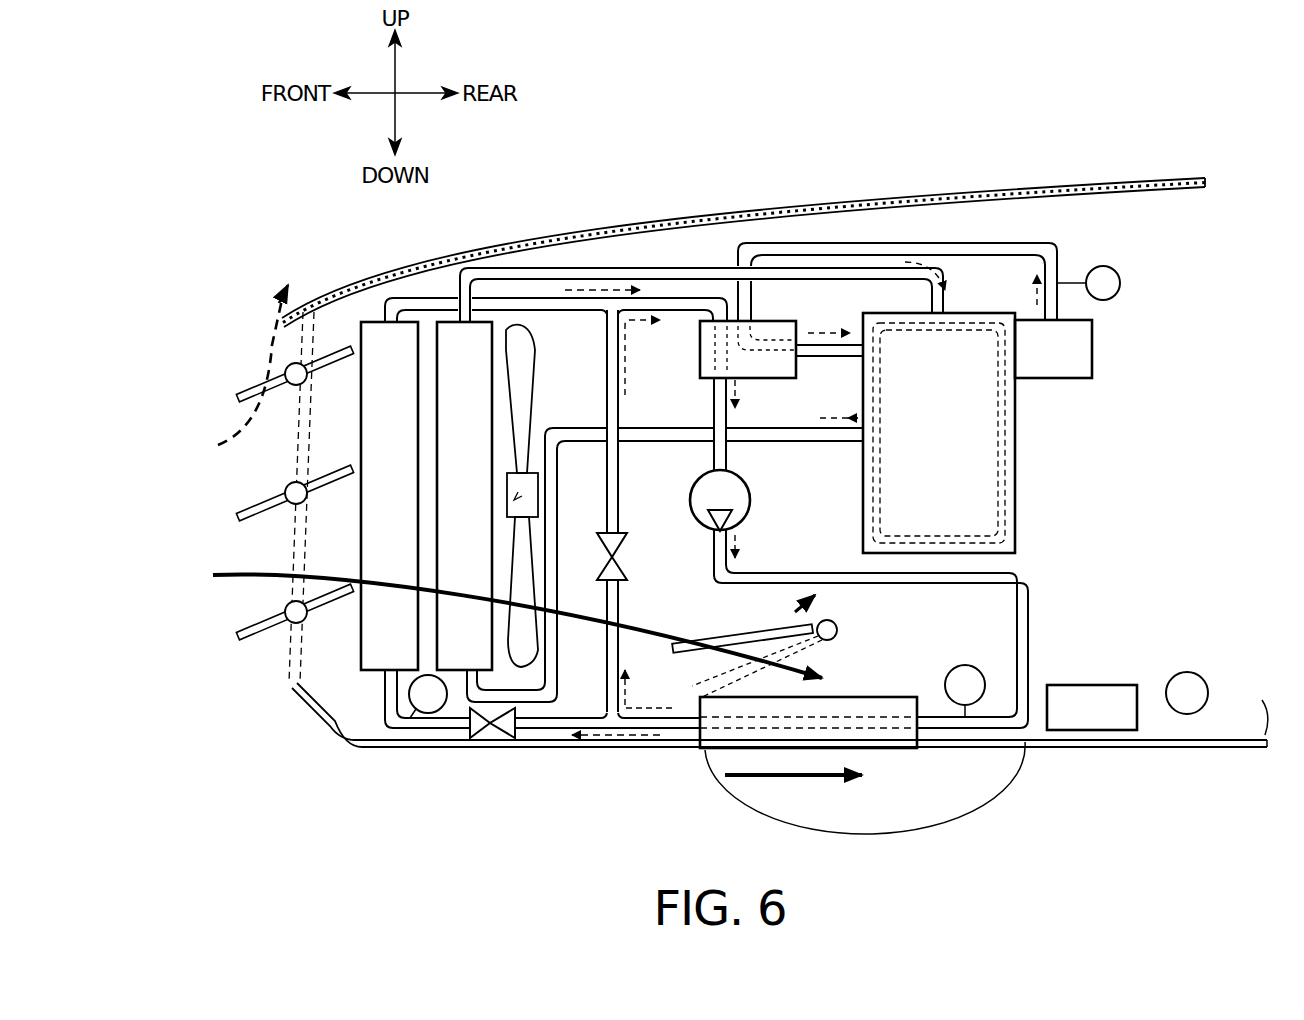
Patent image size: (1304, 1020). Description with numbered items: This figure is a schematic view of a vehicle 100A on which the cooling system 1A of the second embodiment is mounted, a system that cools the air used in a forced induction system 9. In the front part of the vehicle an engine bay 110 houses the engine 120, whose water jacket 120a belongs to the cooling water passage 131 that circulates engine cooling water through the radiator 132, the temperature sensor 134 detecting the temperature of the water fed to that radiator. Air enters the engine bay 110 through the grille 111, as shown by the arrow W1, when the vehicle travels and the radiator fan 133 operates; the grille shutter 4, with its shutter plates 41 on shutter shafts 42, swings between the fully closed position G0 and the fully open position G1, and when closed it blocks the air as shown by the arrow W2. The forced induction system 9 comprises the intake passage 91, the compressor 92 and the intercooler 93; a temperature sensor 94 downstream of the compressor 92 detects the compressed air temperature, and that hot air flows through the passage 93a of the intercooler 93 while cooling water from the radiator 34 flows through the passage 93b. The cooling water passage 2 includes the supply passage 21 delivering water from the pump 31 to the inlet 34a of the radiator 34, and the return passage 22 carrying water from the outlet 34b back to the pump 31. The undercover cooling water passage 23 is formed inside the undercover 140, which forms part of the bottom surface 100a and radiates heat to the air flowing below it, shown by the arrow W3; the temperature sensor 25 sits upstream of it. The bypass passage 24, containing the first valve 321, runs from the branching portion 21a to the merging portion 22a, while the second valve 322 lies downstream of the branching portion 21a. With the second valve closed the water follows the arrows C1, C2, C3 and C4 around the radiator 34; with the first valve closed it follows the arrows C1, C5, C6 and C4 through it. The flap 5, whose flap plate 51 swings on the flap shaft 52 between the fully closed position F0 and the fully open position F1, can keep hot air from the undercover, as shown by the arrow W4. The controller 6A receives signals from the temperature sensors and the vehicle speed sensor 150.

The vehicle 100A is at (1000, 108).
The engine bay 110 is at (1068, 212).
The forced induction system 9 is at (1077, 235).
The radiator 34 is at (372, 322).
The inlet 34a is at (372, 688).
The outlet 34b is at (391, 312).
The cooling water passage 2 is at (442, 290).
The merging portion 22a is at (600, 318).
The arrow C6 is at (615, 283).
The cooling water passage 131 is at (886, 266).
The intake passage 91 is at (970, 243).
The intercooler 93 is at (775, 321).
The passage 93a is at (800, 362).
The passage 93b is at (705, 360).
The arrow C3 is at (640, 340).
The arrow C4 is at (745, 392).
The compressor 92 is at (1060, 378).
The engine 120 is at (1015, 490).
The water jacket 120a is at (1008, 520).
The temperature sensor 94 is at (1120, 283).
The return passage 22 is at (714, 400).
The pump 31 is at (752, 500).
The arrow C1 is at (745, 540).
The supply passage 21 is at (835, 573).
The branching portion 21a is at (601, 712).
The bypass passage 24 is at (620, 470).
The first valve 321 is at (628, 556).
The radiator 132 is at (512, 328).
The radiator fan 133 is at (535, 390).
The second valve 322 is at (490, 740).
The temperature sensor 134 is at (410, 710).
The arrow C5 is at (617, 745).
The arrow C2 is at (655, 745).
The undercover cooling water passage 23 is at (905, 750).
The undercover 140 is at (722, 757).
The temperature sensor 25 is at (945, 684).
The flap plate 51 is at (700, 638).
The flap shaft 52 is at (838, 630).
The flap 5 is at (832, 612).
The fully open position F1 is at (690, 648).
The fully closed position F0 is at (788, 650).
The arrow W4 is at (792, 606).
The arrow W1 is at (213, 575).
The arrow W3 is at (784, 792).
The arrow W2 is at (268, 345).
The grille shutter 4 is at (255, 480).
The shutter shaft 42 is at (286, 482).
The shutter plate 41 is at (240, 518).
The fully open position G1 is at (245, 636).
The fully closed position G0 is at (290, 660).
The grille 111 is at (290, 692).
The cooling system 1A is at (1182, 725).
The bottom surface 100a is at (1085, 738).
The controller 6A is at (1140, 712).
The vehicle speed sensor 150 is at (1208, 690).